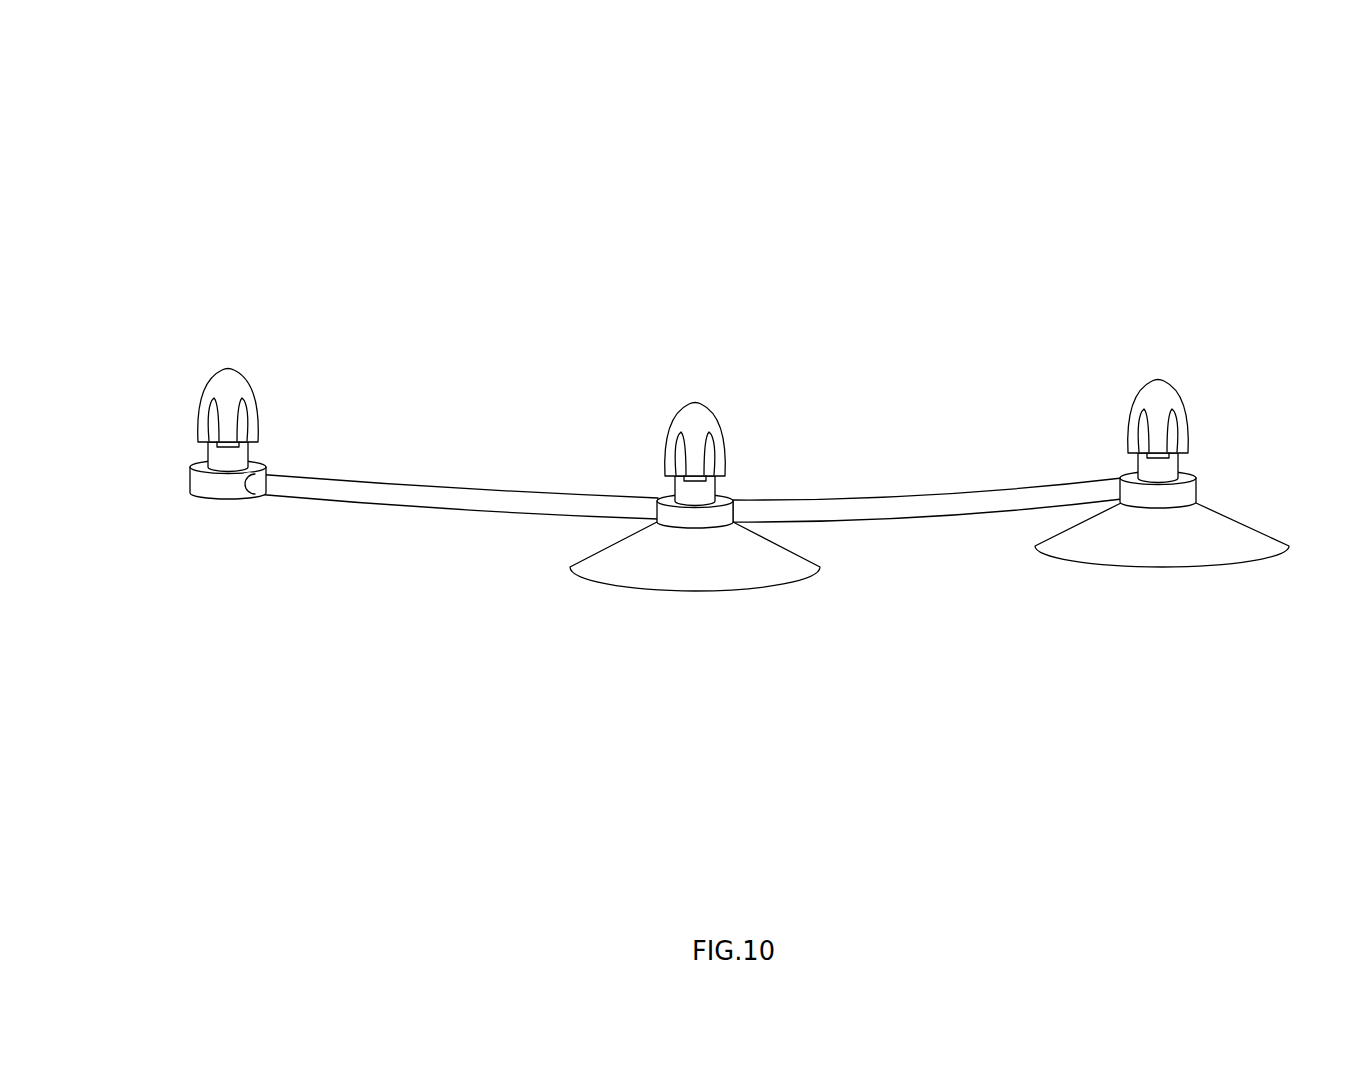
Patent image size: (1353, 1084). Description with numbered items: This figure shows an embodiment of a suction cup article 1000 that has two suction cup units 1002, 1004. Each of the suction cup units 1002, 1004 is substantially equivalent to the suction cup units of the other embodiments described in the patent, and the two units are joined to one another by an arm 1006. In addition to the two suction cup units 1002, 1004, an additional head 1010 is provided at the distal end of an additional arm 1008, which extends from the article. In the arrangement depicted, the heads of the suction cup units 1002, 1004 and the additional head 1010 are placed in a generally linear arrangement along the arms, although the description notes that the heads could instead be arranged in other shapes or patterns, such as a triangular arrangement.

The suction cup article 1000 is at (297, 64).
The suction cup unit 1002 is at (742, 462).
The suction cup unit 1004 is at (1205, 440).
The arm 1006 is at (917, 491).
The additional arm 1008 is at (458, 488).
The additional head 1010 is at (218, 390).